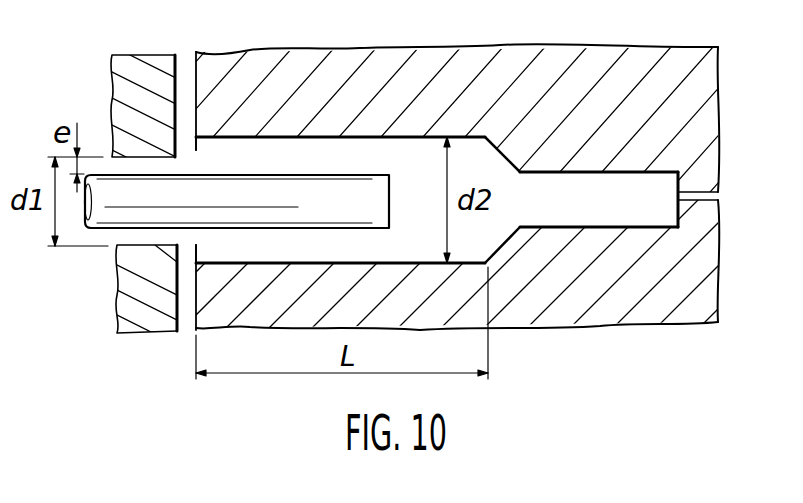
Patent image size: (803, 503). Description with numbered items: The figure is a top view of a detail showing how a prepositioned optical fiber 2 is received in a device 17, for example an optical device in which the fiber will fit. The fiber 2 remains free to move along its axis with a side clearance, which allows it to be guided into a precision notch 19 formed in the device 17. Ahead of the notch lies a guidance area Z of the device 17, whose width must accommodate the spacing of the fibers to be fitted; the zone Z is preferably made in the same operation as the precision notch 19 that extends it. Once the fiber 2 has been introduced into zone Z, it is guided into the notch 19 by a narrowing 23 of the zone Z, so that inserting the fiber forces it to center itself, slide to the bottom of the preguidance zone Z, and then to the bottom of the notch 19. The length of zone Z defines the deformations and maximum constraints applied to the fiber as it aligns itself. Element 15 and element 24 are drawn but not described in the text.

The fiber 2 is at (116, 214).
The wall / plate 15 is at (133, 67).
The device 17 is at (309, 93).
The precision notch 19 is at (618, 181).
The narrowing 23 is at (510, 242).
The wide bore / chamber 24 is at (391, 190).
The guidance area Z is at (250, 153).